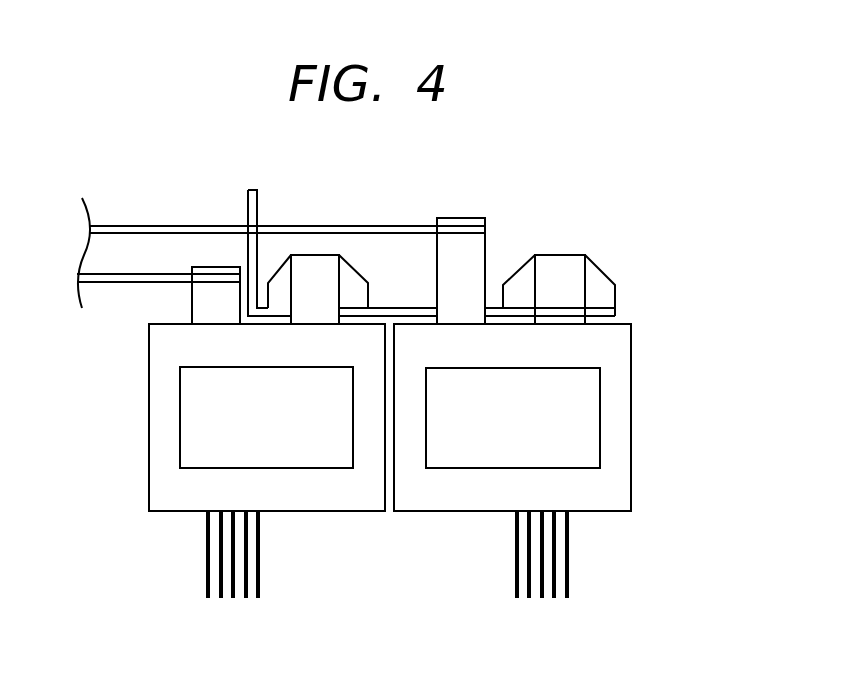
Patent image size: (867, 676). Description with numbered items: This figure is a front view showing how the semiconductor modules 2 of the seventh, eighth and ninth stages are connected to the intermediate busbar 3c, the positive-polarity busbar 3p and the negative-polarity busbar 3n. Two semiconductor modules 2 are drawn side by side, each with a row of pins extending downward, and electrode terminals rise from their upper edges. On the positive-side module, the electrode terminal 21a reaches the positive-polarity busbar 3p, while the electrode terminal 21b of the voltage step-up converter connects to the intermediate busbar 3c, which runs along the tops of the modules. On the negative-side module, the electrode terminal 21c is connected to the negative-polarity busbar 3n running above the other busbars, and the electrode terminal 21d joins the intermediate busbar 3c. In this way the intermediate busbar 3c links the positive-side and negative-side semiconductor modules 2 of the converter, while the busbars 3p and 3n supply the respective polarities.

The semiconductor module 2 is at (157, 490).
The negative-polarity busbar 3n is at (134, 226).
The positive-polarity busbar 3p is at (118, 284).
The intermediate busbar 3c is at (253, 188).
The electrode terminal 21a is at (212, 290).
The electrode terminal 21b is at (320, 258).
The electrode terminal 21c is at (465, 240).
The electrode terminal 21d is at (563, 262).